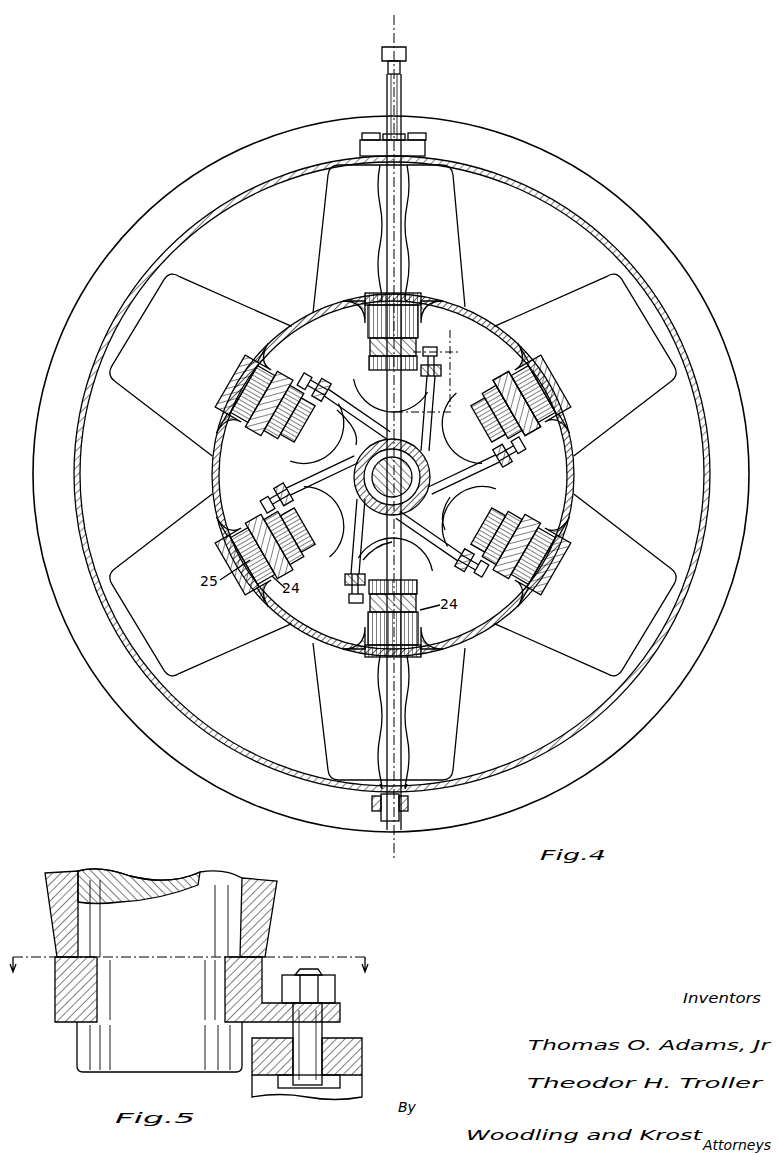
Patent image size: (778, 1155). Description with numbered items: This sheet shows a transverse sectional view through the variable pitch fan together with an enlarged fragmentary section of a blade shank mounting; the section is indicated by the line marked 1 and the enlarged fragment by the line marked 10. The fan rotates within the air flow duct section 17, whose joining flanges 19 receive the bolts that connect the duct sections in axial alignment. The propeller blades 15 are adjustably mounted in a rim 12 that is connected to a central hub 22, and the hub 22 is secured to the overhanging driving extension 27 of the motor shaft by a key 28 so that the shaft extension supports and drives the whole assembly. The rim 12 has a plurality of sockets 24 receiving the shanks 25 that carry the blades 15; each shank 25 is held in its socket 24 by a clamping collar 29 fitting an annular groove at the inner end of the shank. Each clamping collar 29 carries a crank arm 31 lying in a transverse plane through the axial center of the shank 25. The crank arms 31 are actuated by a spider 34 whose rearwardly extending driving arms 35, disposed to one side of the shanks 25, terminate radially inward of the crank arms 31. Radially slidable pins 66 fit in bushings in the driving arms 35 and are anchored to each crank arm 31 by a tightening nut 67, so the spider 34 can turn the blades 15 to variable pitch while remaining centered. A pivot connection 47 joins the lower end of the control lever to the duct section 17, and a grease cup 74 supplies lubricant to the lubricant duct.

In FIG. 4, the section line 1 is at (395, 15).
In FIG. 5, the section line 10 is at (189, 977).
In FIG. 4, the rim 12 is at (575, 470).
In FIG. 4, the propeller blades 15 is at (393, 477).
In FIG. 4, the air flow duct section 17 is at (573, 213).
In FIG. 4, the joining flanges 19 is at (672, 255).
In FIG. 4, the hub 22 is at (428, 480).
In FIG. 4, the sockets 24 is at (365, 326).
In FIG. 5, the sockets 24 is at (266, 916).
In FIG. 4, the shanks 25 is at (558, 398).
In FIG. 5, the shanks 25 is at (183, 895).
In FIG. 4, the overhanging driving extension 27 is at (386, 518).
In FIG. 4, the key 28 is at (380, 442).
In FIG. 4, the clamping collars 29 is at (492, 398).
In FIG. 5, the clamping collars 29 is at (58, 1012).
In FIG. 4, the crank arms 31 is at (308, 368).
In FIG. 5, the crank arms 31 is at (342, 1013).
In FIG. 4, the spider 34 is at (447, 515).
In FIG. 4, the driving arms 35 is at (330, 376).
In FIG. 5, the driving arms 35 is at (364, 1065).
In FIG. 4, the pivot connection 47 is at (410, 802).
In FIG. 5, the radially slidable pins 66 is at (312, 1082).
In FIG. 4, the tightening nut 67 is at (514, 447).
In FIG. 5, the tightening nut 67 is at (315, 974).
In FIG. 4, the grease cup 74 is at (407, 57).